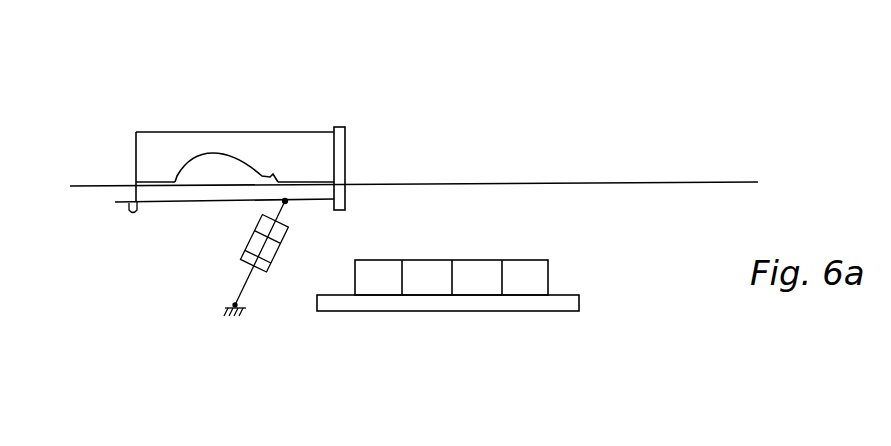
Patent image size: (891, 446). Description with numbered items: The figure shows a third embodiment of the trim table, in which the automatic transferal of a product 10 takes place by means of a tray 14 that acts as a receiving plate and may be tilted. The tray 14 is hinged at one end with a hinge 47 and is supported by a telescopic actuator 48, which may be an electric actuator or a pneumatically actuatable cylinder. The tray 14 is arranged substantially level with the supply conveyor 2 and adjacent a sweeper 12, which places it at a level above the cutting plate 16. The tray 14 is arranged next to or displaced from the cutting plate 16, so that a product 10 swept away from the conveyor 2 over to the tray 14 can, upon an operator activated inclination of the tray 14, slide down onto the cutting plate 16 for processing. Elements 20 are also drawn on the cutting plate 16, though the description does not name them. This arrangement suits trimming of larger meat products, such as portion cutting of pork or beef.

The supply conveyor 2 is at (432, 182).
The product 10 is at (211, 153).
The sweeper 12 is at (287, 157).
The tray 14 is at (197, 193).
The cutting plate 16 is at (563, 303).
The containers 20 is at (383, 324).
The hinge 47 is at (129, 212).
The telescopic actuator 48 is at (277, 255).